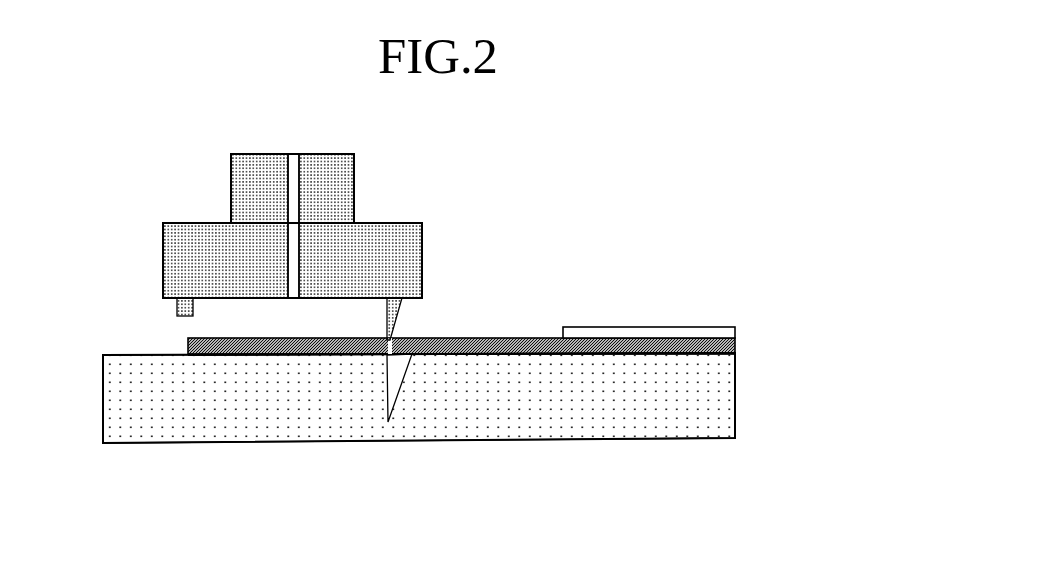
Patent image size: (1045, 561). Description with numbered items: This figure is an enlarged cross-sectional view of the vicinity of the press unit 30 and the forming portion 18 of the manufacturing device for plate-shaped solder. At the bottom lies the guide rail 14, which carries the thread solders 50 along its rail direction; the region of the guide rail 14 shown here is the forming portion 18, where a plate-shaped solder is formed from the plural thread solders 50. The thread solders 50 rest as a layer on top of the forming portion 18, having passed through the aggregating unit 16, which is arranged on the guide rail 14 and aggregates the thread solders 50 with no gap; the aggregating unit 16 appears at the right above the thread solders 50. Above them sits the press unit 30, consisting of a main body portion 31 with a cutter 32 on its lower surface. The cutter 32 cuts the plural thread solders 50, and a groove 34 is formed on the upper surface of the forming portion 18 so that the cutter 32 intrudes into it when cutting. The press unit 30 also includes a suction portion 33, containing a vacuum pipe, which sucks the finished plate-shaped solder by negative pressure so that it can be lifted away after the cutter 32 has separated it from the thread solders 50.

The guide rail 14 is at (590, 417).
The aggregating unit 16 is at (622, 327).
The forming portion 18 is at (292, 356).
The press unit 30 is at (308, 231).
The main body portion 31 is at (163, 265).
The cutter 32 is at (400, 315).
The suction portion 33 is at (300, 264).
The groove 34 is at (393, 385).
The thread solders 50 is at (532, 337).